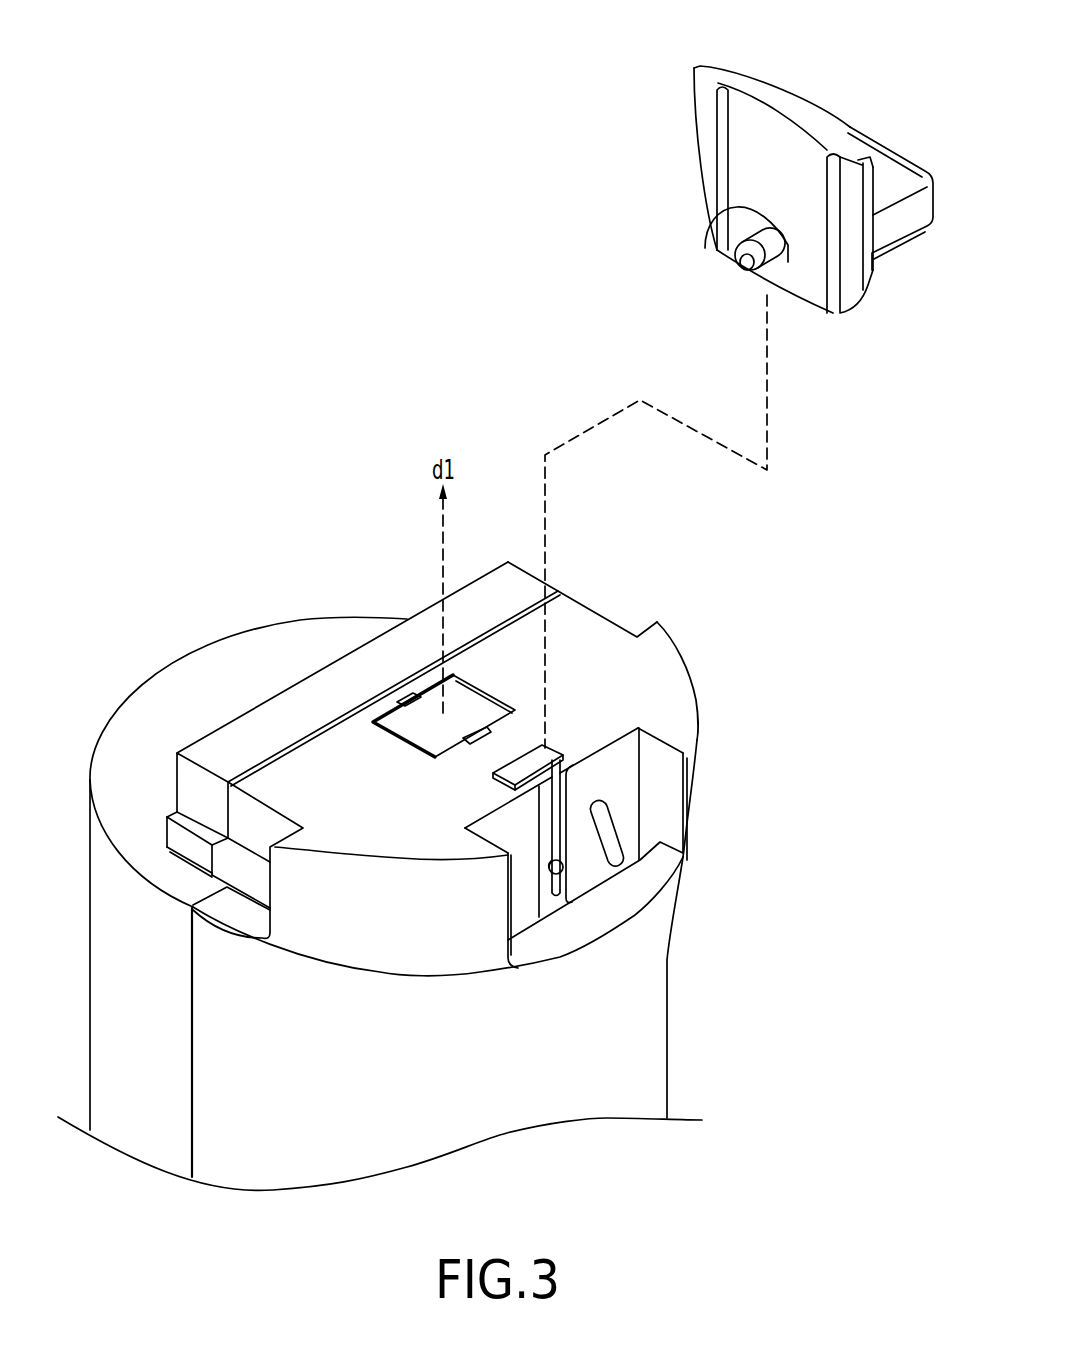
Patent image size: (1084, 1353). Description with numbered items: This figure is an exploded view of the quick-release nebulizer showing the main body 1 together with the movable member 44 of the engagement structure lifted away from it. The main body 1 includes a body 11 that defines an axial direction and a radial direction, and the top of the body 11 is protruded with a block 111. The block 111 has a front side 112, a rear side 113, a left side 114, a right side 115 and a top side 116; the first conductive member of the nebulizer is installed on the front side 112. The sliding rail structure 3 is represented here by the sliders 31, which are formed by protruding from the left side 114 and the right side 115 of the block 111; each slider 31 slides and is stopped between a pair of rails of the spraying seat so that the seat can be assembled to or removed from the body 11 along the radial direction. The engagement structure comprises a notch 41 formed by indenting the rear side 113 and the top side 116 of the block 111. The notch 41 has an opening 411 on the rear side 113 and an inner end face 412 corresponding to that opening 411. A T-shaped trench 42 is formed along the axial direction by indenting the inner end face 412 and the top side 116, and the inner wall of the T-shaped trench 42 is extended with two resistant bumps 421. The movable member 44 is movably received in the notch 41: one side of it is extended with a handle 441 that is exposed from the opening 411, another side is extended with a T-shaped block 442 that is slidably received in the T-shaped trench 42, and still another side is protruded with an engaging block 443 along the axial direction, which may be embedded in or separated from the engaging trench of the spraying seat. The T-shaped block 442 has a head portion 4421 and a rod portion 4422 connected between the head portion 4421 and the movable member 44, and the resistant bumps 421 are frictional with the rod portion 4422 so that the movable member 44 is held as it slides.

The main body 1 is at (688, 1048).
The body 11 is at (668, 1002).
The block 111 is at (710, 698).
The front side 112 is at (370, 640).
The rear side 113 is at (690, 817).
The left side 114 is at (192, 793).
The right side 115 is at (590, 607).
The top side 116 is at (657, 667).
The sliding rail structure 3 is at (148, 832).
The slider 31 is at (188, 847).
The notch 41 is at (700, 778).
The opening 411 is at (690, 797).
The inner end face 412 is at (608, 760).
The T-shaped trench 42 is at (530, 760).
The resistant bump 421 is at (562, 872).
The movable member 44 is at (886, 292).
The handle 441 is at (900, 167).
The T-shaped block 442 is at (613, 200).
The head portion 4421 is at (743, 242).
The rod portion 4422 is at (743, 209).
The engaging block 443 is at (802, 110).